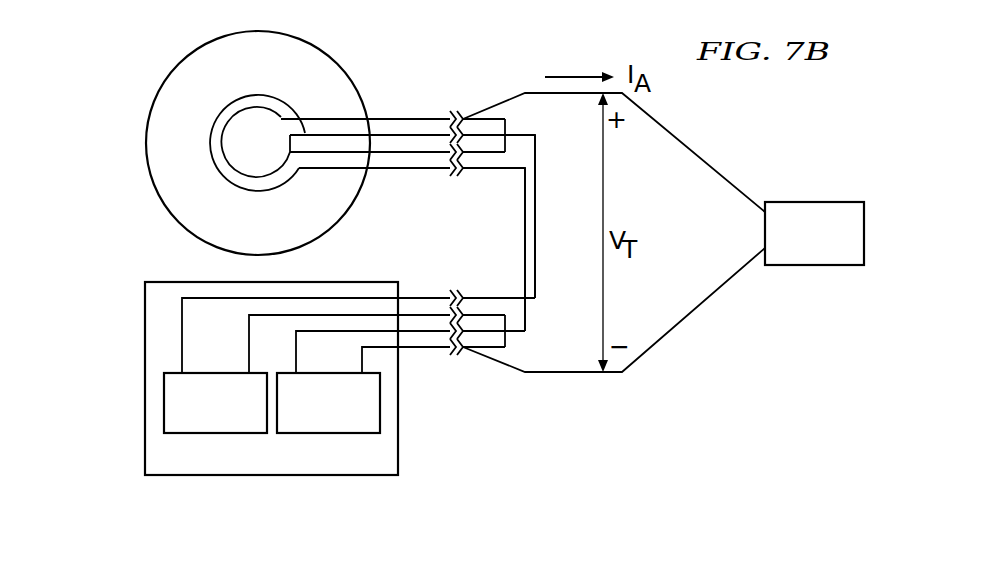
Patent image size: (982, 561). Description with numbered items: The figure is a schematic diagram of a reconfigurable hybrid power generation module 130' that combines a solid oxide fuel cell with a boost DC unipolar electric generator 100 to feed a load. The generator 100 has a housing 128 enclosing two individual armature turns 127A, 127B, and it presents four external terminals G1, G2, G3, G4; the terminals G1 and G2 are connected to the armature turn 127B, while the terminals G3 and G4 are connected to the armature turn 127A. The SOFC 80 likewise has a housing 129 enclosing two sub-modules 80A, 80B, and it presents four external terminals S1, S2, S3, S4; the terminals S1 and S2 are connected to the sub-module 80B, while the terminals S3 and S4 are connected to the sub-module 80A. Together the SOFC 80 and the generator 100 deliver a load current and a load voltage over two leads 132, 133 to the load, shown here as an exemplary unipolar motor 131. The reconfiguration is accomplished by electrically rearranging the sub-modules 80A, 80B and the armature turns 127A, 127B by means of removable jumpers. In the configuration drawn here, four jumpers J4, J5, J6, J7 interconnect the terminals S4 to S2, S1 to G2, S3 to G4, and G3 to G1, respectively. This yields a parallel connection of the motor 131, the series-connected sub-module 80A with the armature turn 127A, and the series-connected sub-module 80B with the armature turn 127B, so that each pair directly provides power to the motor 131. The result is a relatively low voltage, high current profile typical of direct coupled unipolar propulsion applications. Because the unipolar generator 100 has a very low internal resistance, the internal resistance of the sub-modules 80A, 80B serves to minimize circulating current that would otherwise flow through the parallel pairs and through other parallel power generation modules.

The boost DC unipolar electric generator 100 is at (135, 120).
The housing 128 is at (310, 43).
The armature turn 127A is at (224, 177).
The armature turn 127B is at (257, 178).
The lead 133 is at (523, 93).
The lead 132 is at (525, 374).
The unipolar motor 131 is at (797, 202).
The reconfigurable hybrid power generation module 130' is at (211, 373).
The housing 129 is at (145, 437).
The SOFC 80 is at (215, 488).
The sub-module 80A is at (330, 433).
The sub-module 80B is at (210, 433).
The external terminal G1 is at (453, 110).
The external terminal G2 is at (462, 127).
The external terminal G3 is at (465, 160).
The external terminal G4 is at (455, 177).
The external terminal S1 is at (453, 290).
The external terminal S2 is at (462, 305).
The external terminal S3 is at (465, 338).
The external terminal S4 is at (455, 356).
The jumper J4 is at (505, 345).
The jumper J5 is at (535, 252).
The jumper J6 is at (525, 207).
The jumper J7 is at (505, 121).